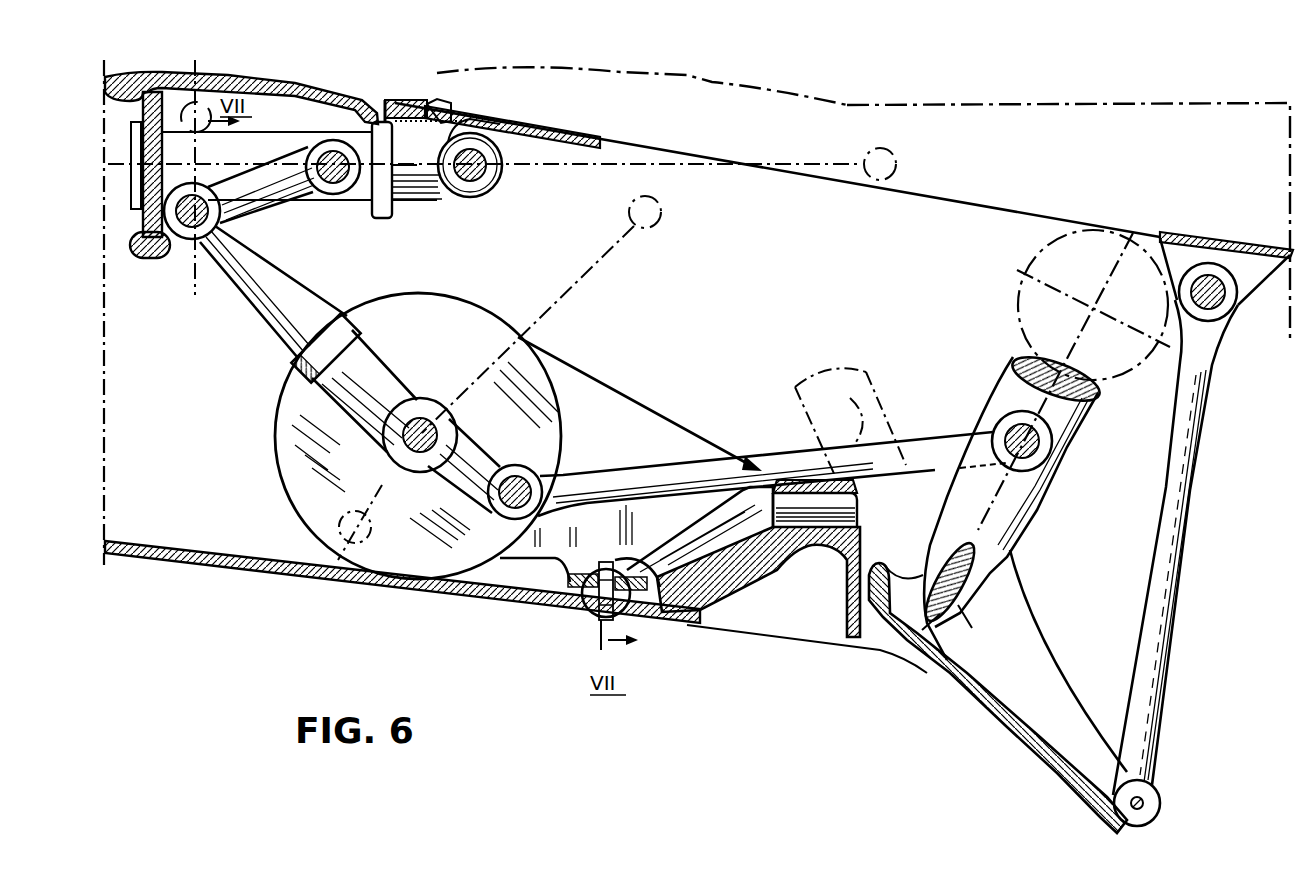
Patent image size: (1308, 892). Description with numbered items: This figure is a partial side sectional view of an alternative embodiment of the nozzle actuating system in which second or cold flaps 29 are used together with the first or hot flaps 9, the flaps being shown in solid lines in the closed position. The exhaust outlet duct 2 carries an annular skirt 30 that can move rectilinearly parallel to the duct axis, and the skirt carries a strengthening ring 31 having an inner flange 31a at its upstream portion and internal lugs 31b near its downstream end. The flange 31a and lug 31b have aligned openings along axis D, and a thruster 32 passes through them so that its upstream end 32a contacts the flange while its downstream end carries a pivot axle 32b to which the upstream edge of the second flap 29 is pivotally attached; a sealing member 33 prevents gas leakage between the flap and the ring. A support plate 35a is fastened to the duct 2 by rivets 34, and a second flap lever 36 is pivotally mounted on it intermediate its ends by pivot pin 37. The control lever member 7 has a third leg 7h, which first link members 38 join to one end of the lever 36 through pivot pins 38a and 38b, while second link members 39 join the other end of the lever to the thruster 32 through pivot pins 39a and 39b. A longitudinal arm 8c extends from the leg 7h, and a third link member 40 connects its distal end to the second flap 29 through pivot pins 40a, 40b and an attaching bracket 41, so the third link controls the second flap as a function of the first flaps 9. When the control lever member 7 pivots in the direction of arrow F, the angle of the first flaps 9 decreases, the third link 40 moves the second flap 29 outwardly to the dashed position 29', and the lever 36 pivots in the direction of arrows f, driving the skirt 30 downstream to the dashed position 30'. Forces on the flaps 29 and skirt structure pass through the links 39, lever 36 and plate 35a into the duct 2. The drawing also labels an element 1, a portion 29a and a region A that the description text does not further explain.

The support bracket 1 is at (697, 585).
The exhaust outlet duct 2 is at (163, 545).
The control lever member 7 is at (988, 414).
The third leg 7h is at (1033, 504).
The longitudinal arm 8c is at (1010, 633).
The first flaps 9 is at (993, 716).
The second flaps 29 is at (782, 316).
The position of second flap 29' is at (1068, 200).
The upper plate 29a is at (500, 128).
The annular skirt 30 is at (124, 150).
The position of annular skirt 30' is at (642, 95).
The strengthening ring 31 is at (323, 88).
The inner flange 31a is at (151, 260).
The internal lugs 31b is at (388, 218).
The thruster 32 is at (433, 194).
The upstream end of thruster 32a is at (134, 255).
The pivot axle 32b is at (490, 176).
The sealing member 33 is at (447, 111).
The rivets 34 is at (590, 624).
The support plate 35a is at (640, 386).
The second flap lever 36 is at (377, 370).
The pivot pin 37 is at (447, 426).
The first link members 38 is at (630, 476).
The pivot pin 38a is at (1042, 448).
The pivot pin 38b is at (516, 482).
The second link members 39 is at (258, 205).
The pivot pin 39a is at (194, 245).
The pivot pin 39b is at (386, 112).
The third link members 40 is at (1183, 530).
The pivot pin 40a is at (1157, 797).
The pivot pin 40b is at (1228, 302).
The attaching bracket 41 is at (1178, 250).
The section area A is at (970, 567).
The axis D is at (243, 162).
The arrow F is at (1053, 710).
The arrows f is at (362, 462).